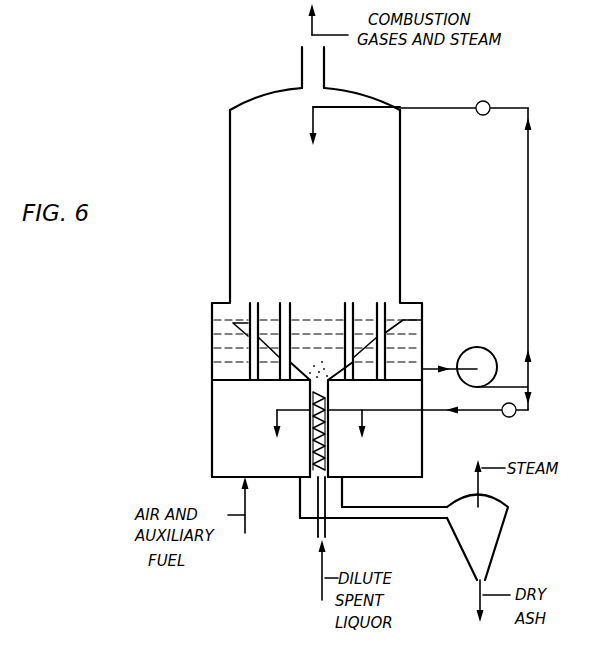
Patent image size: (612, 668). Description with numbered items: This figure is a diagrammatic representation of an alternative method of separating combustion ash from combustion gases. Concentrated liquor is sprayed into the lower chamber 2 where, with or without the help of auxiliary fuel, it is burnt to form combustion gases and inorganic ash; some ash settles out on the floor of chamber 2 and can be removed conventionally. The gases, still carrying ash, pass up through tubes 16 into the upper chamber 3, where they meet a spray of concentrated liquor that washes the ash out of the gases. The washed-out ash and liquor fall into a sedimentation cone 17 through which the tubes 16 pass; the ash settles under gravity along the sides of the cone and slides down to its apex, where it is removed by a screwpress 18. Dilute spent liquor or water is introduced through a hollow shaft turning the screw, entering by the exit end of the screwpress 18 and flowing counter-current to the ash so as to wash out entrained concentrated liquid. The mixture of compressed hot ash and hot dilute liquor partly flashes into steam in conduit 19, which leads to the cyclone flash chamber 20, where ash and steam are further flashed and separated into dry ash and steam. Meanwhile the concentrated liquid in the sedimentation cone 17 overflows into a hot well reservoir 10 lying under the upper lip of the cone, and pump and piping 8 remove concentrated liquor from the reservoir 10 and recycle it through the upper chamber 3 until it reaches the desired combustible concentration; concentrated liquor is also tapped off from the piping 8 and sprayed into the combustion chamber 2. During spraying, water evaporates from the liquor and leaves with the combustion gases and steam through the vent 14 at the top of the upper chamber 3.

The lower chamber 2 is at (233, 427).
The upper chamber 3 is at (258, 212).
The pump and piping 8 is at (527, 328).
The hot well reservoir 10 is at (412, 344).
The vent 14 is at (326, 73).
The tubes 16 is at (377, 303).
The sedimentation cone 17 is at (243, 330).
The screwpress 18 is at (333, 456).
The conduit 19 is at (423, 523).
The cyclone - flash chamber 20 is at (503, 532).